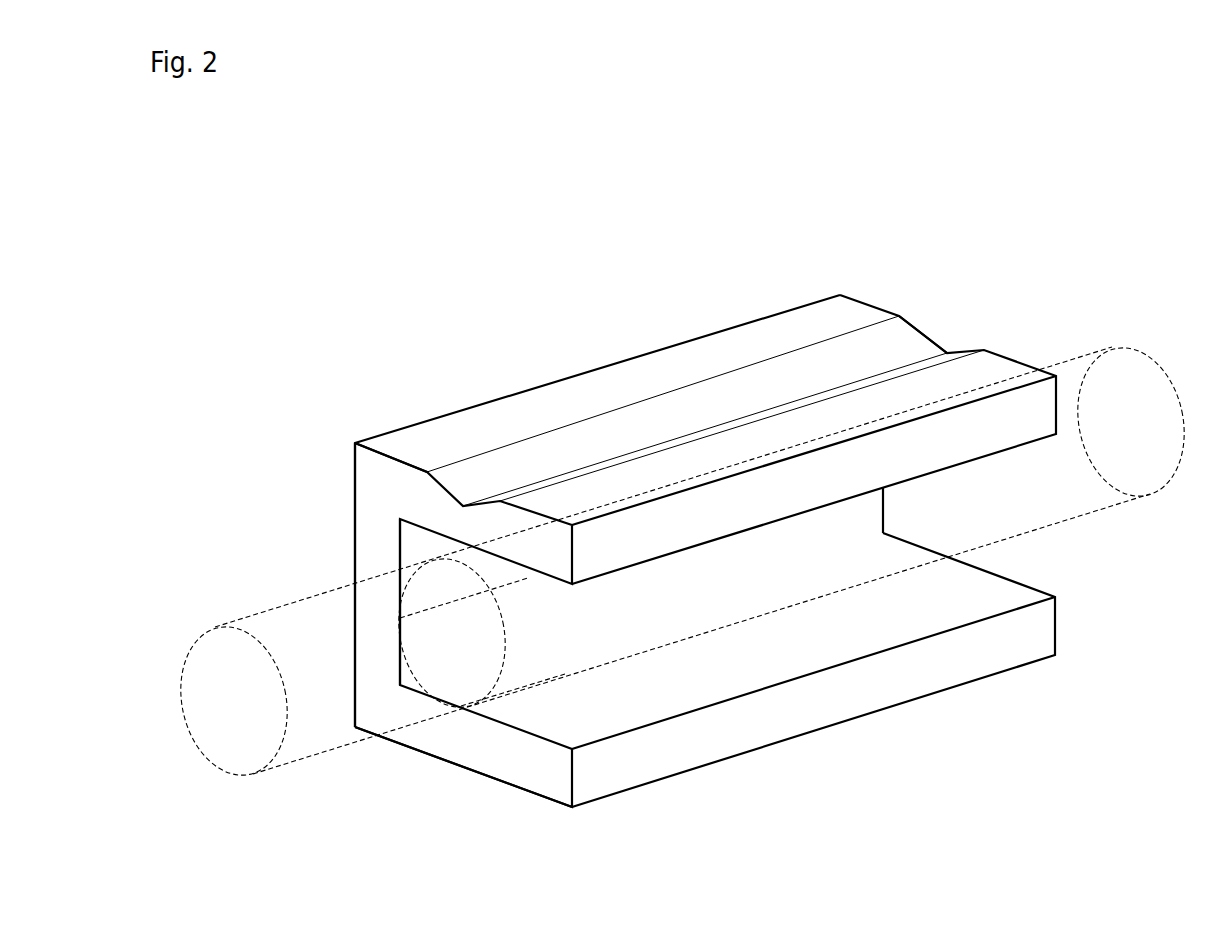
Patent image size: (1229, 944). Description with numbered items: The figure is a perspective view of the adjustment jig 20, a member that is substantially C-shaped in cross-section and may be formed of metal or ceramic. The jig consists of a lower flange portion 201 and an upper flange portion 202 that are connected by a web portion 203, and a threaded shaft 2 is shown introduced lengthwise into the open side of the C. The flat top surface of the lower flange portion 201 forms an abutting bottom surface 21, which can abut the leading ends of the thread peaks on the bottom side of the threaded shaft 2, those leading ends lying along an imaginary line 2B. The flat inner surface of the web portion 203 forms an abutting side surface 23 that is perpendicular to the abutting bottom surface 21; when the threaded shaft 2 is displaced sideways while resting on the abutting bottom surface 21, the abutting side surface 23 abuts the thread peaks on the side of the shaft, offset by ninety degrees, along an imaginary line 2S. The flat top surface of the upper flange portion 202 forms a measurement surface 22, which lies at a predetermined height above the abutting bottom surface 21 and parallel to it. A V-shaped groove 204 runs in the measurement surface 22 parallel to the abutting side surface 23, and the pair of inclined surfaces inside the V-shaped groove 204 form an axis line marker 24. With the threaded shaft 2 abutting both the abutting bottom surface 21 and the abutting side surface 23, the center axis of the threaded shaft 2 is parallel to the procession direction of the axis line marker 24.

The threaded shaft 2 is at (1087, 363).
The imaginary line 2S is at (493, 585).
The imaginary line 2B is at (545, 672).
The adjustment jig 20 is at (342, 433).
The abutting bottom surface 21 is at (992, 595).
The measurement surface 22 is at (785, 332).
The abutting side surface 23 is at (850, 512).
The axis line marker 24 is at (908, 343).
The lower flange portion 201 is at (512, 758).
The upper flange portion 202 is at (412, 493).
The web portion 203 is at (367, 543).
The V-shaped groove 204 is at (537, 486).